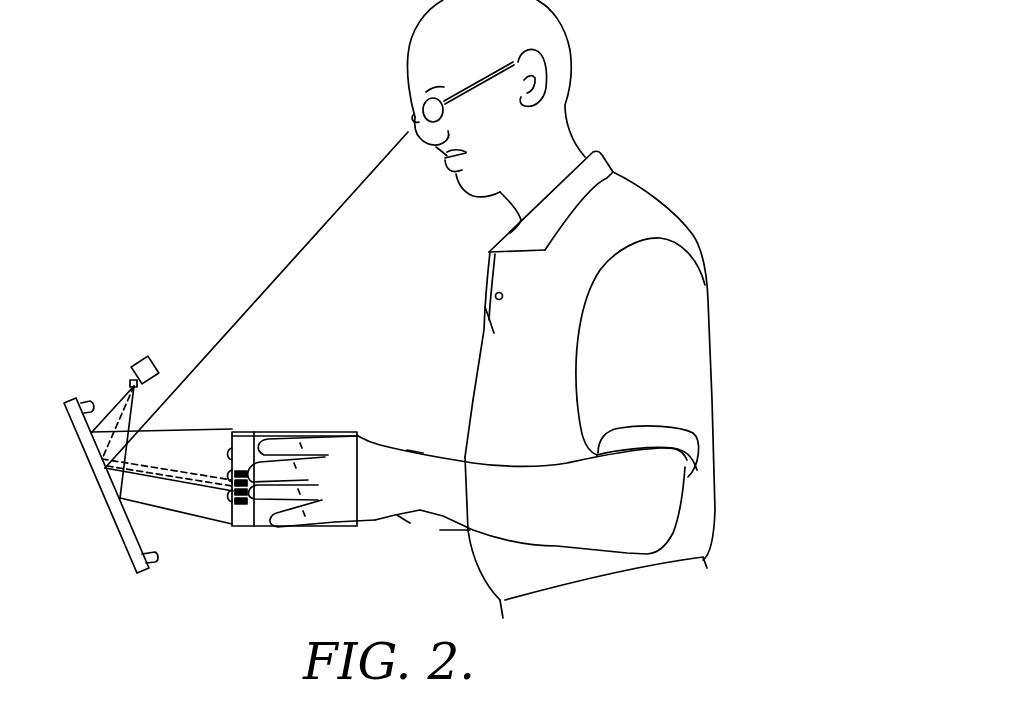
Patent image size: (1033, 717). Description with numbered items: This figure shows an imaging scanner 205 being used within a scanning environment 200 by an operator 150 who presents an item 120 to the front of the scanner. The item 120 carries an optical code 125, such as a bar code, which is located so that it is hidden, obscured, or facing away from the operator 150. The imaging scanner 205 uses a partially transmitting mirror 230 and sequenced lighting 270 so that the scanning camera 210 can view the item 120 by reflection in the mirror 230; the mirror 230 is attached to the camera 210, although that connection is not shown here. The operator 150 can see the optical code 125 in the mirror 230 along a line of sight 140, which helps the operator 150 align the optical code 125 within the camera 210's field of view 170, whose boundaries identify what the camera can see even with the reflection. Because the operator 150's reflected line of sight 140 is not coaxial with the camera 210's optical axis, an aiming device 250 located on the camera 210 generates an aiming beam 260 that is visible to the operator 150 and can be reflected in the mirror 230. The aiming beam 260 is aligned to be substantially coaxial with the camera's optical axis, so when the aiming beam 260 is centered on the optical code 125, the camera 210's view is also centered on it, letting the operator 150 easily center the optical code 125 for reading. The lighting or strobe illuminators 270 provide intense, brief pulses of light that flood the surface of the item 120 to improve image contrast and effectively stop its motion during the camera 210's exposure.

The scanning environment 200 is at (90, 42).
The operator 150 is at (698, 241).
The line of sight 140 is at (297, 258).
The field of view 170 is at (182, 430).
The aiming beam 260 is at (170, 468).
The imaging scanner 205 is at (86, 512).
The partially transmitting mirror 230 is at (145, 573).
The sequenced lighting 270 is at (83, 402).
The scanning camera 210 is at (148, 356).
The aiming device 250 is at (133, 378).
The item 120 is at (344, 430).
The optical code 125 is at (238, 505).